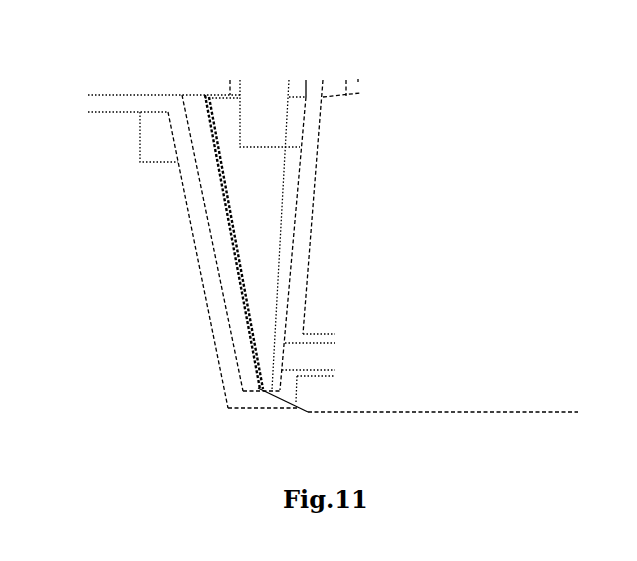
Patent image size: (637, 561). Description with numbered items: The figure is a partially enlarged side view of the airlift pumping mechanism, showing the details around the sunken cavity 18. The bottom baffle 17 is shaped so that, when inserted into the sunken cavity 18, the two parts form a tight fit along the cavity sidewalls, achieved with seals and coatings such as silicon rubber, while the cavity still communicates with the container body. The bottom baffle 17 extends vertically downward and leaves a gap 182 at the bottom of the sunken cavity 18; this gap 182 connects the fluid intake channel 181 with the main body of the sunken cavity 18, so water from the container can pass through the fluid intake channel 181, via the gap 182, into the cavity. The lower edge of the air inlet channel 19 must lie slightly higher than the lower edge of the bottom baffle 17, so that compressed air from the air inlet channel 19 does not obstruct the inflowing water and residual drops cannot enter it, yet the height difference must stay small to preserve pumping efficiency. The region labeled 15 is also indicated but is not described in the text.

The upper housing portion 15 is at (268, 121).
The bottom baffle 17 is at (235, 231).
The sunken cavity 18 is at (260, 282).
The fluid intake channel 181 is at (213, 198).
The gap 182 is at (419, 400).
The air inlet channel 19 is at (334, 358).